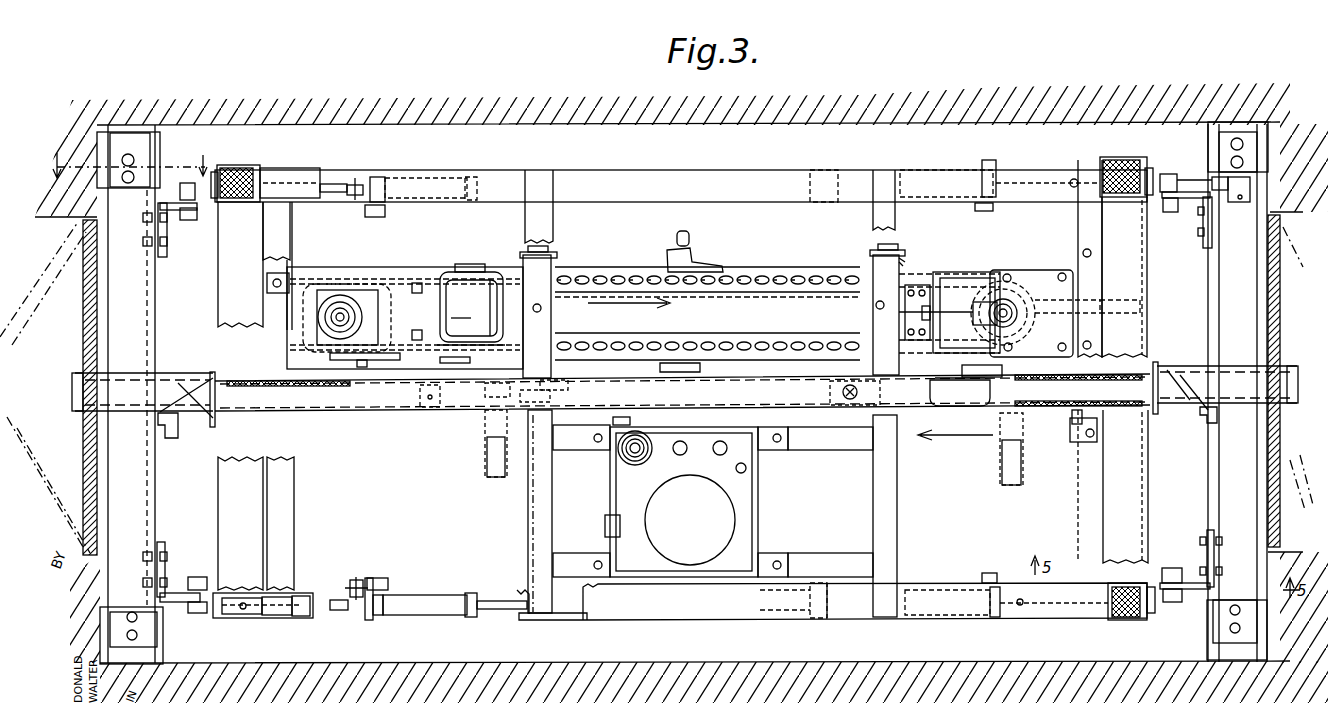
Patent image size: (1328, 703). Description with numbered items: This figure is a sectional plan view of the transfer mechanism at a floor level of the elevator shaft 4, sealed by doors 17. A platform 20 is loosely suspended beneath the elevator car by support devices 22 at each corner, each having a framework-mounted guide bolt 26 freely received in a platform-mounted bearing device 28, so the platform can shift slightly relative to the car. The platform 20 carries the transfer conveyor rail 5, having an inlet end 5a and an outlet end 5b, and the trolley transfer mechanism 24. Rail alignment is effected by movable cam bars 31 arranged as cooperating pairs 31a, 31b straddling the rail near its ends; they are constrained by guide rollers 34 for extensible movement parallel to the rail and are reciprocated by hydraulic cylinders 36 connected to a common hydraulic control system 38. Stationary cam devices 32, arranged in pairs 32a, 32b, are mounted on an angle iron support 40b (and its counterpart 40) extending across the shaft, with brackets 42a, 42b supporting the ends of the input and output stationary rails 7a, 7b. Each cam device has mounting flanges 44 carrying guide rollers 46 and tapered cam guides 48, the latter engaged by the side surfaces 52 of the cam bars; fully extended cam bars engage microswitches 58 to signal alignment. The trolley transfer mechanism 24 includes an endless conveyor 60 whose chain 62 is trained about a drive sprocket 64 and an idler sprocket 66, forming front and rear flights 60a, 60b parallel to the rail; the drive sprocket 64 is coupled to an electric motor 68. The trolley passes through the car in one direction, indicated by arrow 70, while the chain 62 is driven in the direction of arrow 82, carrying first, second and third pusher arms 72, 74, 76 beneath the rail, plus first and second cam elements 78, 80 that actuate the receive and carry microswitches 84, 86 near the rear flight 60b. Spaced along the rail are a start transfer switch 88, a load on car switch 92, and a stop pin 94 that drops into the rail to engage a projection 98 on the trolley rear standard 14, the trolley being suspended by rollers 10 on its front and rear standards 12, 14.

The elevator shaft 4 is at (822, 125).
The transfer conveyor rail 5 is at (439, 416).
The inlet end 5a is at (1157, 366).
The outlet end 5b is at (220, 422).
The input stationary rail 7a is at (1265, 378).
The output stationary rail 7b is at (163, 418).
The rollers 10 is at (545, 380).
The front trolley standard 12 is at (548, 393).
The rear trolley standard 14 is at (862, 393).
The doors 17 is at (85, 453).
The platform 20 is at (428, 170).
The support devices 22 is at (250, 161).
The trolley transfer mechanism 24 is at (722, 220).
The guide bolts 26 is at (240, 200).
The bearing devices 28 is at (280, 202).
The cam bars 31 is at (340, 182).
The first pair of cam bars 31a is at (1053, 163).
The second pair of cam bars 31b is at (326, 209).
The stationary cam devices 32 is at (186, 151).
The first pair of cam devices 32a is at (1210, 200).
The second pair of cam devices 32b is at (181, 208).
The guide rollers 34 is at (288, 618).
The hydraulic cylinders 36 is at (415, 186).
The hydraulic control system 38 is at (779, 532).
The right column 40 is at (1248, 276).
The angle iron support 40b is at (150, 333).
The bracket 42a is at (1208, 415).
The bracket 42b is at (166, 438).
The mounting flanges 44 is at (1203, 226).
The guide rollers 46 is at (1170, 174).
The tapered cam guides 48 is at (1185, 211).
The side surfaces 52 is at (1094, 197).
The microswitches 58 is at (1212, 174).
The endless conveyor 60 is at (799, 243).
The front conveyor flight 60a is at (776, 345).
The rear conveyor flight 60b is at (736, 253).
The endless conveyor chain 62 is at (602, 275).
The drive sprocket 64 is at (375, 298).
The idler sprocket 66 is at (970, 285).
The electric motor 68 is at (405, 316).
The arrow 70 is at (988, 434).
The first pusher arm 72 is at (961, 379).
The second pusher arm 74 is at (1084, 299).
The third pusher arm 76 is at (674, 240).
The first cam element 78 is at (873, 252).
The second cam element 80 is at (678, 375).
The arrow 82 is at (612, 300).
The receive microswitch 84 is at (905, 258).
The carry microswitch 86 is at (520, 262).
The start transfer switch 88 is at (1023, 469).
The load on car switch 92 is at (485, 461).
The stop pin 94 is at (848, 400).
The projection 98 is at (863, 410).